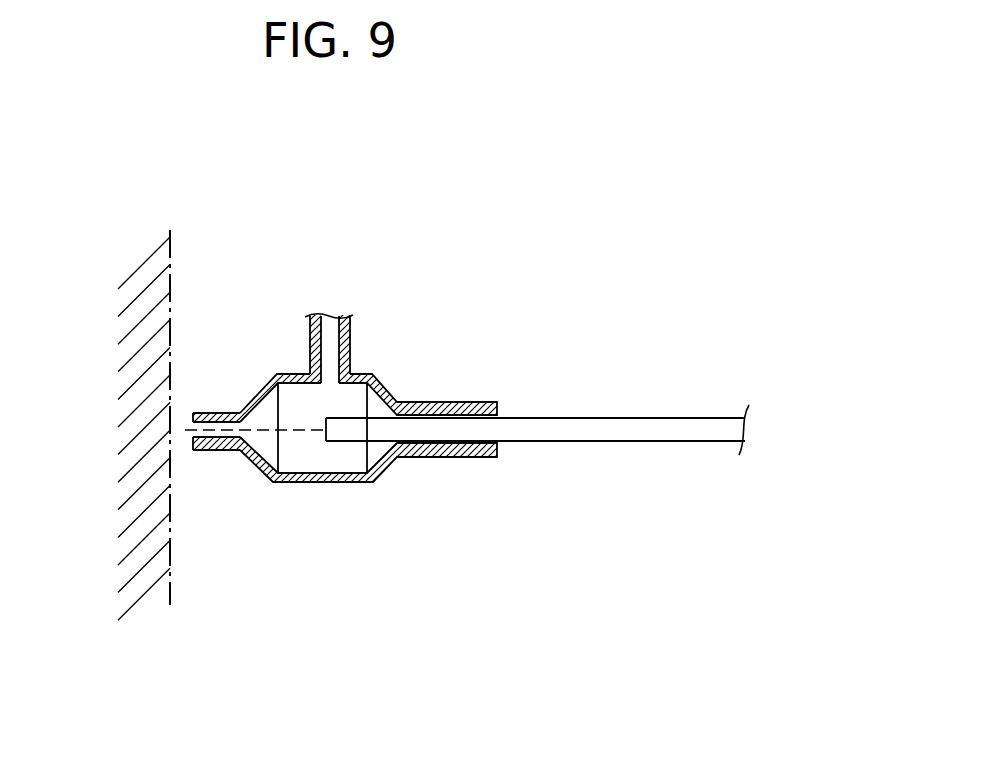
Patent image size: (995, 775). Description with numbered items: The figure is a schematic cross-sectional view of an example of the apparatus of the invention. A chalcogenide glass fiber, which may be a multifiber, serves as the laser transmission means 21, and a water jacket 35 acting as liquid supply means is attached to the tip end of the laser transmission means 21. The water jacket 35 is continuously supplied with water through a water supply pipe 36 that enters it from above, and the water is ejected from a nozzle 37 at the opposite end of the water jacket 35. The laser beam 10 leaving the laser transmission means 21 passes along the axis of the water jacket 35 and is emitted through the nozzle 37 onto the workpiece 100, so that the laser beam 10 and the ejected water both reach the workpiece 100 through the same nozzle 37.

The workpiece 100 is at (152, 300).
The water supply pipe 36 is at (322, 263).
The nozzle 37 is at (213, 448).
The water jacket 35 is at (327, 483).
The laser transmission means 21 is at (653, 428).
The laser beam 10 is at (300, 431).